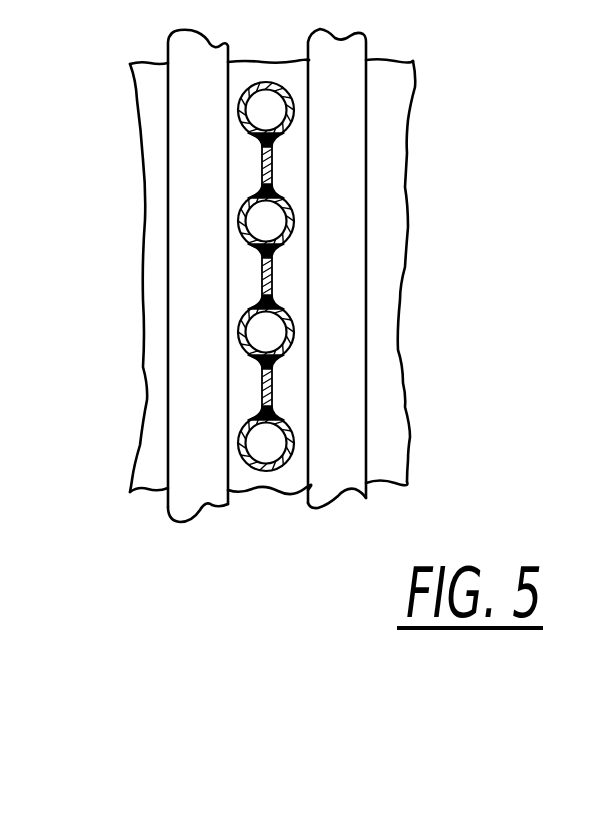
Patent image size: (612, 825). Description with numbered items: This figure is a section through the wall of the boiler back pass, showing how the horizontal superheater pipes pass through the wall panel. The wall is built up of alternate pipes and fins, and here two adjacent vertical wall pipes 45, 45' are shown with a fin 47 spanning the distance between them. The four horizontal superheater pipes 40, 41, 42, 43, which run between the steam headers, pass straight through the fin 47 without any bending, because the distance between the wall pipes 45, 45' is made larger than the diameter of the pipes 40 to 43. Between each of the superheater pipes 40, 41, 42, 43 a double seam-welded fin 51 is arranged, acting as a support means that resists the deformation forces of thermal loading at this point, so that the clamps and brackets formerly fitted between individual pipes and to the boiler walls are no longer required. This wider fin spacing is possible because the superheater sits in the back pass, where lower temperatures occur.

The superheater pipe 40 is at (238, 116).
The superheater pipe 41 is at (239, 222).
The superheater pipe 42 is at (239, 332).
The superheater pipe 43 is at (238, 440).
The pipe 45 is at (138, 276).
The pipe 45' is at (404, 268).
The fin 47 is at (293, 403).
The double seam-welded fin 51 is at (278, 390).